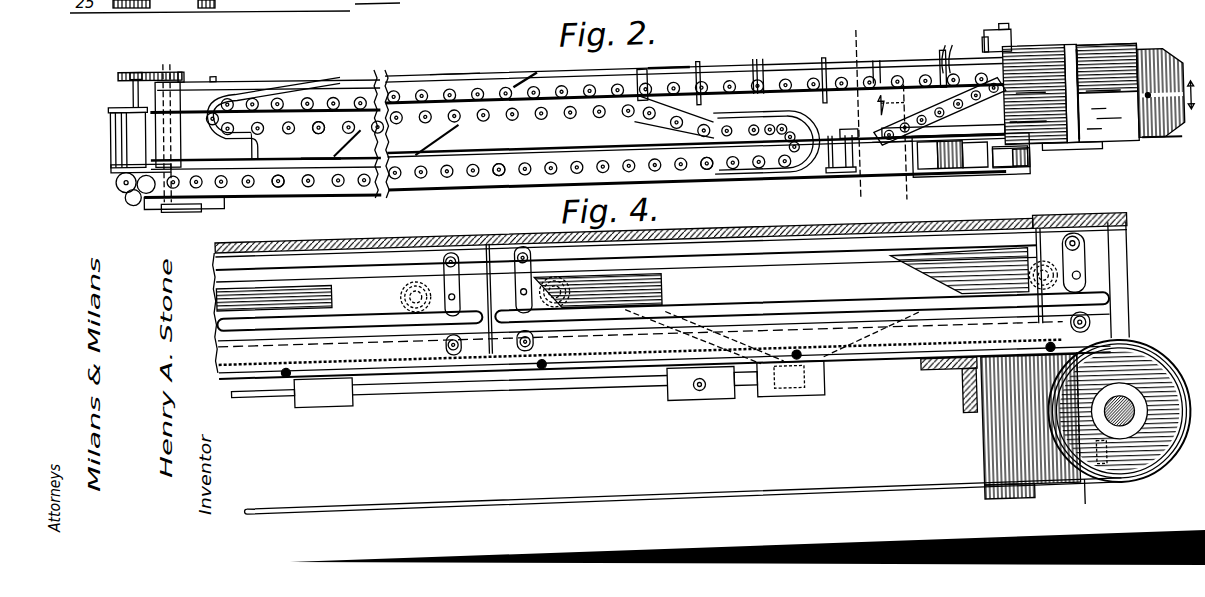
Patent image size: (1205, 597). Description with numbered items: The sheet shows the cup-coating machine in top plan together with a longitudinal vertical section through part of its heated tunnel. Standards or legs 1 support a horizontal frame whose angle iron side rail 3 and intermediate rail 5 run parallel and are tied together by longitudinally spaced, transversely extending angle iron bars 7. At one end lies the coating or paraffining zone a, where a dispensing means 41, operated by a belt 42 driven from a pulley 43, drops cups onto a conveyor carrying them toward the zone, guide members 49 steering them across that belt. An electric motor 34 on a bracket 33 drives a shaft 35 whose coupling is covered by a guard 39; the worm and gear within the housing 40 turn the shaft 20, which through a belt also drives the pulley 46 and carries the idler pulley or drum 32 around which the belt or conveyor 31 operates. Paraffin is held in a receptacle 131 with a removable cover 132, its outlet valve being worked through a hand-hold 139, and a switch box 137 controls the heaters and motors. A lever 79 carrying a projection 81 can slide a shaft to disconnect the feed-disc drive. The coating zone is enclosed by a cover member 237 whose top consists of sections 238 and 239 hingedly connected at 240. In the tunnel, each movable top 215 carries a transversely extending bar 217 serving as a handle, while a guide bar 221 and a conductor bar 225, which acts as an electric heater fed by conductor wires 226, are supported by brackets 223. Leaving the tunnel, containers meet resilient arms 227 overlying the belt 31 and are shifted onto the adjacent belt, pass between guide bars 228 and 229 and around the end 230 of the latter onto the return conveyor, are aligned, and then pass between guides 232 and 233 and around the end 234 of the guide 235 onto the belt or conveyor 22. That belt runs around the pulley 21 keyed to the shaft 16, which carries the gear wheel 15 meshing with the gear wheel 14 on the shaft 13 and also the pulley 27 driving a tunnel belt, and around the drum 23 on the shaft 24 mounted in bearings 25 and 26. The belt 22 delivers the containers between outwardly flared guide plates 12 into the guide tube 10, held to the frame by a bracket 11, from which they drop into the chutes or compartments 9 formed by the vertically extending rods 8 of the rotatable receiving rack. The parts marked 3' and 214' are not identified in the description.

In FIG. 4, the standards or legs 1 is at (990, 478).
In FIG. 4, the angle iron side beam or rail 3 is at (449, 397).
In FIG. 2, the offset dimension 3' is at (882, 103).
In FIG. 2, the intermediate beam or rail 5 is at (455, 82).
In FIG. 4, the intermediate beam or rail 5 is at (1135, 280).
In FIG. 2, the transversely extending angle iron bars 7 is at (1191, 104).
In FIG. 4, the transversely extending angle iron bars 7 is at (945, 393).
In FIG. 4, the vertically extending rods 8 is at (201, 313).
In FIG. 2, the chutes or compartments 9 is at (115, 182).
In FIG. 2, the guide member or tube 10 is at (138, 188).
In FIG. 2, the bracket 11 is at (114, 157).
In FIG. 2, the outwardly flared guide plates 12 is at (168, 207).
In FIG. 2, the transversely extending shaft 13 is at (130, 95).
In FIG. 2, the gear wheel 14 is at (120, 70).
In FIG. 2, the gear wheel 15 is at (181, 70).
In FIG. 2, the shaft 16 is at (866, 48).
In FIG. 4, the shaft 20 is at (1118, 430).
In FIG. 2, the pulley or drum 21 is at (205, 210).
In FIG. 2, the endless belt or conveyor 22 is at (700, 180).
In FIG. 2, the pulley or drum 23 is at (830, 184).
In FIG. 2, the shaft 24 is at (830, 189).
In FIG. 2, the bearing 25 is at (826, 184).
In FIG. 2, the bearing 26 is at (162, 122).
In FIG. 2, the pulley or drum 27 is at (172, 112).
In FIG. 2, the belt or conveyor 31 is at (436, 76).
In FIG. 4, the belt or conveyor 31 is at (592, 390).
In FIG. 4, the pulley or drum 32 is at (1129, 383).
In FIG. 2, the bracket 33 is at (920, 192).
In FIG. 2, the electric motor 34 is at (945, 194).
In FIG. 2, the shaft 35 is at (1005, 194).
In FIG. 2, the guard 39 is at (977, 186).
In FIG. 2, the housing 40 is at (1030, 177).
In FIG. 2, the means for dispensing paper cups 41 is at (843, 127).
In FIG. 2, the belt 42 is at (921, 127).
In FIG. 2, the pulley 43 is at (941, 111).
In FIG. 2, the pulley 46 is at (1028, 121).
In FIG. 2, the guide members 49 is at (946, 50).
In FIG. 2, the lever 79 is at (985, 53).
In FIG. 2, the projection 81 is at (1004, 50).
In FIG. 2, the receptacle or container 131 is at (1155, 72).
In FIG. 2, the removable cover 132 is at (1156, 162).
In FIG. 2, the switch box 137 is at (874, 160).
In FIG. 2, the hand-hold 139 is at (1161, 80).
In FIG. 2, the bracket 214' is at (822, 62).
In FIG. 4, the bracket 214' is at (766, 275).
In FIG. 2, the movable top 215 is at (772, 68).
In FIG. 4, the movable top 215 is at (393, 250).
In FIG. 2, the transversely extending bar 217 is at (815, 76).
In FIG. 4, the transversely extending bar 217 is at (797, 244).
In FIG. 2, the guide bar 221 is at (1068, 90).
In FIG. 4, the guide bar 221 is at (345, 325).
In FIG. 4, the brackets 223 is at (521, 255).
In FIG. 4, the conductor bar 225 is at (285, 290).
In FIG. 4, the conductor wires 226 is at (752, 414).
In FIG. 2, the resilient arms 227 is at (655, 70).
In FIG. 2, the guide arm or bar 228 is at (273, 92).
In FIG. 2, the guide bar or arm 229 is at (312, 133).
In FIG. 2, the end of guide bar 229 230 is at (220, 134).
In FIG. 2, the guide 232 is at (640, 133).
In FIG. 2, the guide 233 is at (704, 127).
In FIG. 2, the end of guide 235 234 is at (765, 186).
In FIG. 2, the guide 235 is at (740, 187).
In FIG. 2, the cover member 237 is at (1104, 162).
In FIG. 2, the section of cover top 238 is at (1035, 85).
In FIG. 2, the section of cover top 239 is at (1110, 80).
In FIG. 2, the hinge connection 240 is at (1075, 66).
In FIG. 2, the coating or paraffining zone a is at (1090, 81).